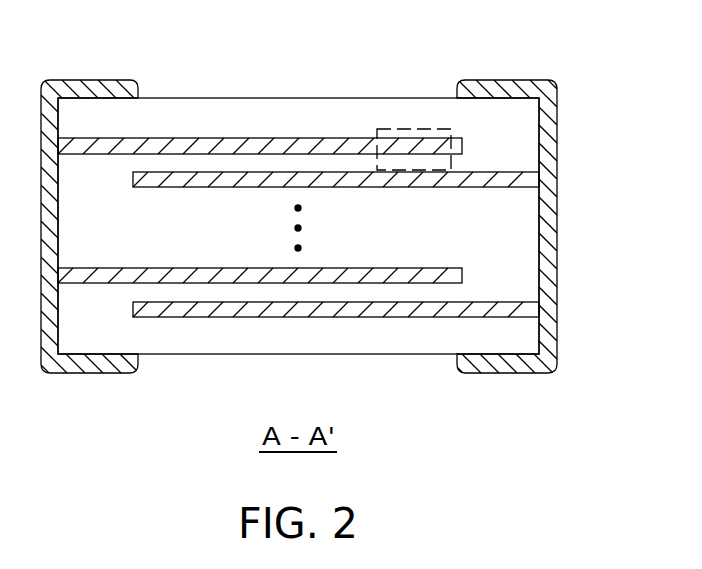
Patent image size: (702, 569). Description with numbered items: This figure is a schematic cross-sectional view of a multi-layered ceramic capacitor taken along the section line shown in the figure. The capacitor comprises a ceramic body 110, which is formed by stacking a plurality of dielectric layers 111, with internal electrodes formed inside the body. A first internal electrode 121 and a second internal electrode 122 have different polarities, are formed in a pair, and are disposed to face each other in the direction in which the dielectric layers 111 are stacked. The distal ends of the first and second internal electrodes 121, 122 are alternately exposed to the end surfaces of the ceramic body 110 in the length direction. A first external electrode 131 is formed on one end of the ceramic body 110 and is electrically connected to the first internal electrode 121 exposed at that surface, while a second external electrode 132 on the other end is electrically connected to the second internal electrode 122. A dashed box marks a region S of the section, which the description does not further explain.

The ceramic body 110 is at (300, 97).
The dielectric layer 111 is at (450, 293).
The first internal electrode 121 is at (425, 266).
The second internal electrode 122 is at (487, 313).
The first external electrode 131 is at (92, 90).
The second external electrode 132 is at (503, 95).
The region S is at (413, 128).